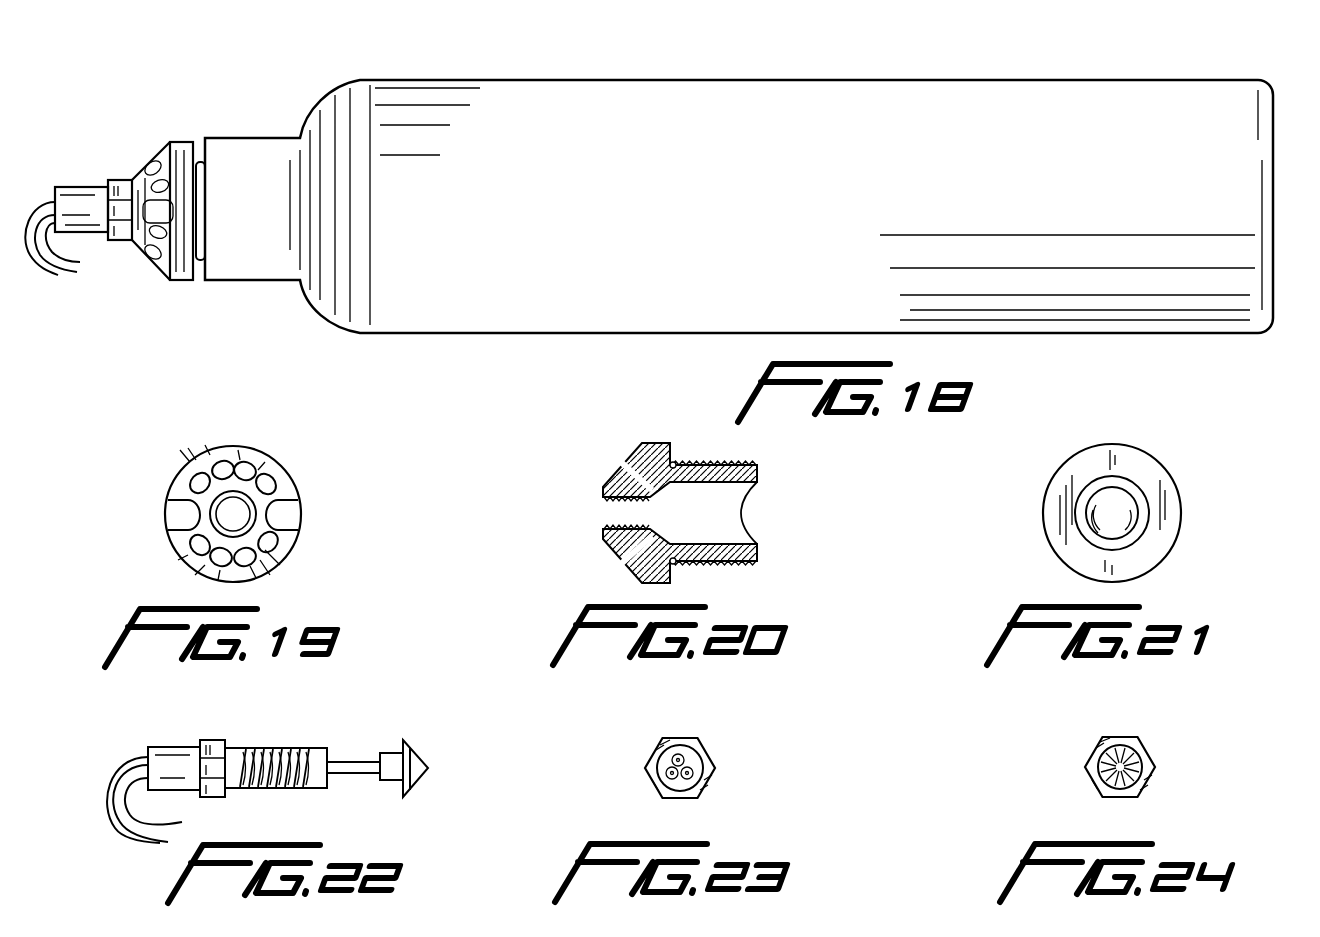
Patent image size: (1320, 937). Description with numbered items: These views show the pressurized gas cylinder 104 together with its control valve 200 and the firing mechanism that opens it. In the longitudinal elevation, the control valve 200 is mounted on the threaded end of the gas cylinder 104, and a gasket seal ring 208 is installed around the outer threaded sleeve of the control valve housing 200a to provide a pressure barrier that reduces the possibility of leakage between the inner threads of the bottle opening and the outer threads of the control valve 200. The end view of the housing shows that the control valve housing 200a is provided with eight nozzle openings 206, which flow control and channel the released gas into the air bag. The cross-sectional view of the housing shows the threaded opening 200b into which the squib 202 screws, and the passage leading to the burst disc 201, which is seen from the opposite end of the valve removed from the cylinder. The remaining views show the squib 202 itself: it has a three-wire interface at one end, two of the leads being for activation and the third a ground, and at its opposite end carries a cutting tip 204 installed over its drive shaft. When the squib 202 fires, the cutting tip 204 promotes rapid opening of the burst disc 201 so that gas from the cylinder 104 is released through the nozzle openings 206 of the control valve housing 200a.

In FIG. 18, the pressurized gas cylinder 104 is at (478, 79).
In FIG. 18, the control valve 200 is at (184, 191).
In FIG. 18, the control valve housing 200a is at (187, 155).
In FIG. 19, the control valve housing 200a is at (267, 463).
In FIG. 20, the control valve housing 200a is at (643, 445).
In FIG. 21, the control valve housing 200a is at (1170, 525).
In FIG. 20, the threaded opening 200b is at (605, 507).
In FIG. 20, the burst disc 201 is at (755, 497).
In FIG. 21, the burst disc 201 is at (1087, 500).
In FIG. 18, the squib 202 is at (108, 178).
In FIG. 22, the squib 202 is at (324, 793).
In FIG. 23, the squib 202 is at (716, 780).
In FIG. 24, the squib 202 is at (1154, 787).
In FIG. 22, the cutting tip 204 is at (377, 760).
In FIG. 24, the cutting tip 204 is at (1107, 753).
In FIG. 18, the nozzle openings 206 is at (148, 262).
In FIG. 18, the gasket seal ring 208 is at (202, 263).